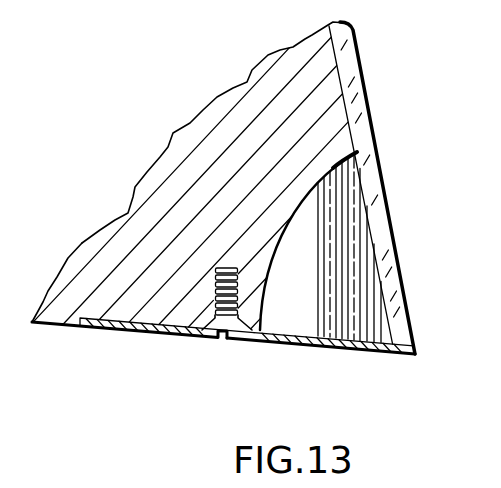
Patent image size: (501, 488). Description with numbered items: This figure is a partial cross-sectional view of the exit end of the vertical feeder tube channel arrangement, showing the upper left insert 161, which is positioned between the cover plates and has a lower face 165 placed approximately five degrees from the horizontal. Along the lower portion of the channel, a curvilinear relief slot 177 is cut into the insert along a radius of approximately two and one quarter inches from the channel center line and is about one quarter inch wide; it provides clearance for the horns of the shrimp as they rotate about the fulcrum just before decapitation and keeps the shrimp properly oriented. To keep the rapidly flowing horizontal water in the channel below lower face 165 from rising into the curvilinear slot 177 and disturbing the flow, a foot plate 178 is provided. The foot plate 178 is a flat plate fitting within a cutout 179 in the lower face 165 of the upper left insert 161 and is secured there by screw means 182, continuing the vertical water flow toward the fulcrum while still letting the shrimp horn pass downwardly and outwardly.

The upper left insert 161 is at (192, 122).
The lower face 165 is at (46, 331).
The curvilinear relief slot 177 is at (275, 243).
The foot plate 178 is at (285, 345).
The cutout 179 is at (126, 323).
The screw means 182 is at (218, 342).